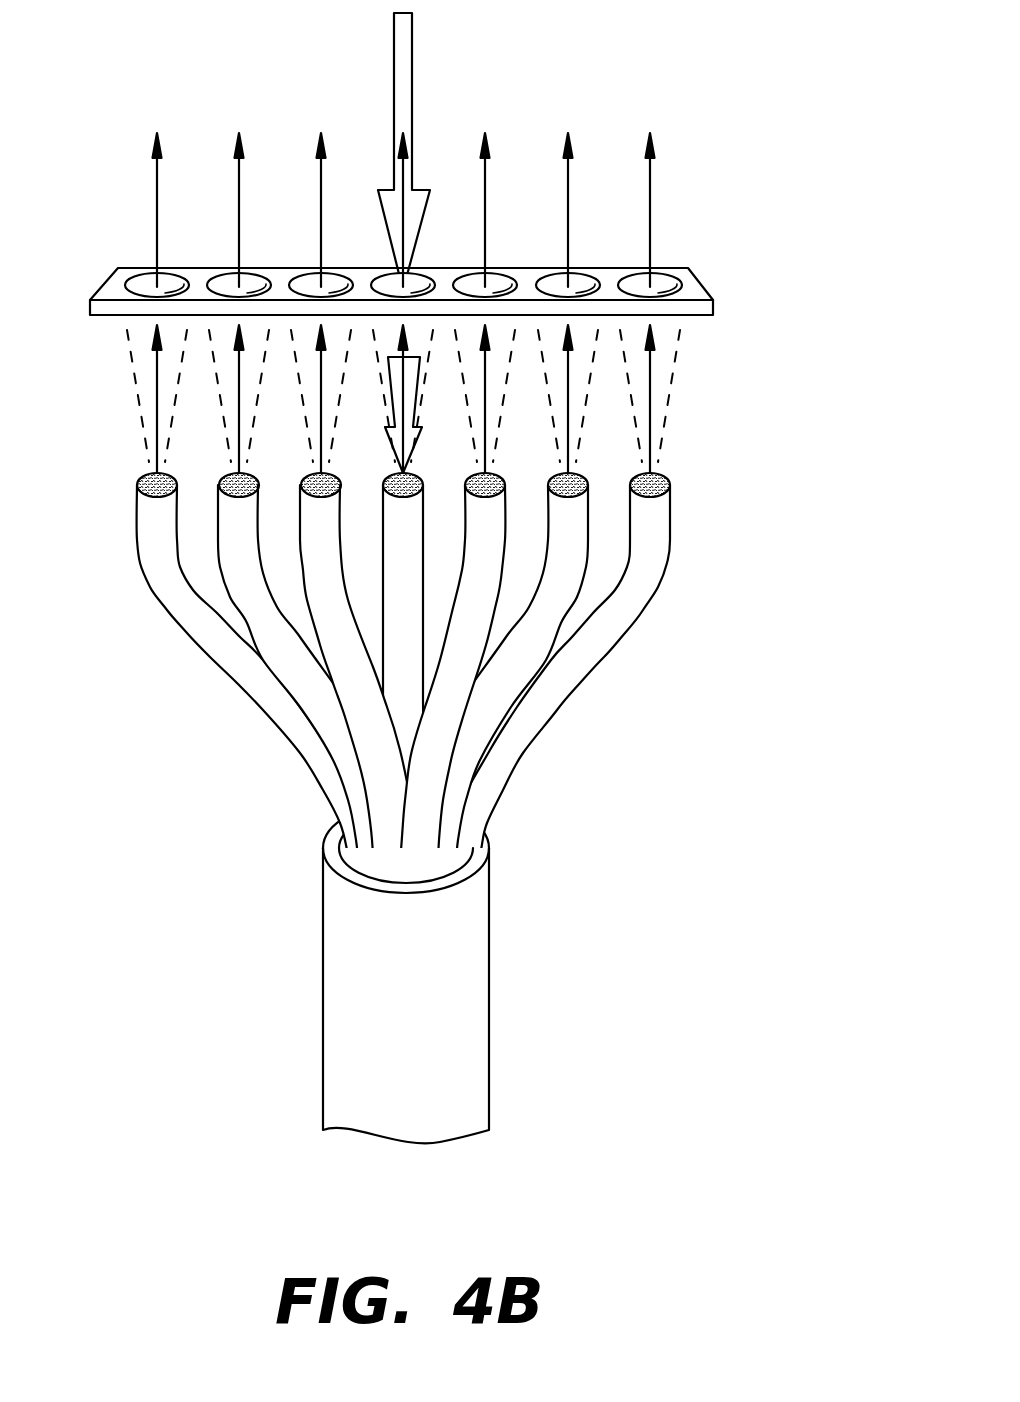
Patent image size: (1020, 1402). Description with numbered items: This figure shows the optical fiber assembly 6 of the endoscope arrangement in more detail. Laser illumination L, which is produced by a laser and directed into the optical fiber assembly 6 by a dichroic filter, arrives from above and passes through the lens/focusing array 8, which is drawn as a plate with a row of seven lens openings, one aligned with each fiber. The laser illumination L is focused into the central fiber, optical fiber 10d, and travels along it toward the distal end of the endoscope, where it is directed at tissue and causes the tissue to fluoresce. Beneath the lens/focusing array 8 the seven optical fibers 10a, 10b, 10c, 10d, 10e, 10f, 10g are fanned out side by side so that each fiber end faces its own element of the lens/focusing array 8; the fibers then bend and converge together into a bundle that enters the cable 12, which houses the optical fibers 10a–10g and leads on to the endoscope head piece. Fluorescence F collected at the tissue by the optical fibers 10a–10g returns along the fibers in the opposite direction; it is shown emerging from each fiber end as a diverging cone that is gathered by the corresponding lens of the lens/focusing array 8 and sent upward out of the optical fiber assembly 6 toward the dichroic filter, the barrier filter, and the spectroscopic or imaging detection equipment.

The optical fiber assembly 6 is at (735, 382).
The lens/focusing array 8 is at (688, 283).
The optical fiber 10a is at (158, 509).
The optical fiber 10b is at (240, 509).
The optical fiber 10c is at (322, 509).
The optical fiber 10d is at (404, 509).
The optical fiber 10e is at (486, 509).
The optical fiber 10f is at (569, 509).
The optical fiber 10g is at (651, 509).
The cable 12 is at (455, 1012).
The laser illumination L is at (404, 40).
The fluorescence F is at (159, 185).